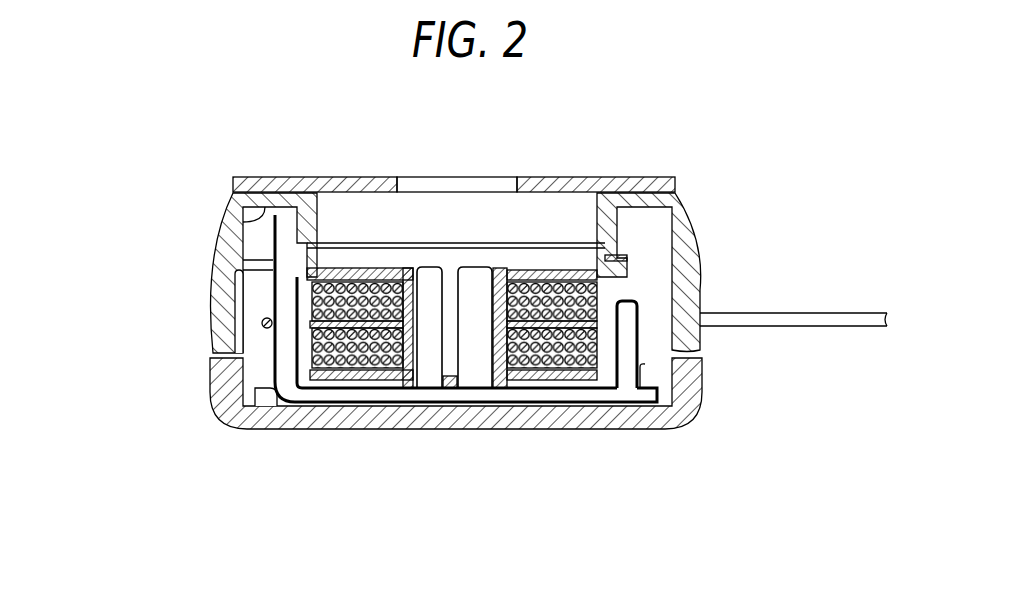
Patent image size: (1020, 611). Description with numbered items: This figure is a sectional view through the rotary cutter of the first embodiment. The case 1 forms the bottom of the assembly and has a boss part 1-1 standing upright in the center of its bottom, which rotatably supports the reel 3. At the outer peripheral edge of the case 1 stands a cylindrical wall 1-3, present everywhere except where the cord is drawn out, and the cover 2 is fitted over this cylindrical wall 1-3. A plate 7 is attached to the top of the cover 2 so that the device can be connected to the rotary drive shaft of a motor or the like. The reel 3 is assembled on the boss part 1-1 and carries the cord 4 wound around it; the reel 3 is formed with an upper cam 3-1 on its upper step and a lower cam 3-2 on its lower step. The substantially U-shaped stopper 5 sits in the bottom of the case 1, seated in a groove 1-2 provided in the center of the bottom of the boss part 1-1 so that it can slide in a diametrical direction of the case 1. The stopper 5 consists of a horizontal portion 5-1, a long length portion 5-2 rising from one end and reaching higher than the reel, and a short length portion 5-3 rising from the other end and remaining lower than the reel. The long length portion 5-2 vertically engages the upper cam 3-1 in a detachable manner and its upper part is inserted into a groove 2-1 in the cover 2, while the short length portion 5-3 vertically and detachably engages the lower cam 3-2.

The case 1 is at (414, 312).
The boss part 1-1 is at (472, 278).
The groove 1-2 is at (267, 398).
The cylindrical wall 1-3 is at (237, 320).
The cover 2 is at (447, 273).
The groove 2-1 is at (245, 221).
The reel 3 is at (526, 304).
The upper cam 3-1 is at (623, 258).
The lower cam 3-2 is at (592, 385).
The cord 4 is at (343, 360).
The stopper 5 is at (447, 369).
The horizontal portion 5-1 is at (550, 396).
The long length portion 5-2 is at (283, 299).
The short length portion 5-3 is at (623, 312).
The plate 7 is at (636, 177).